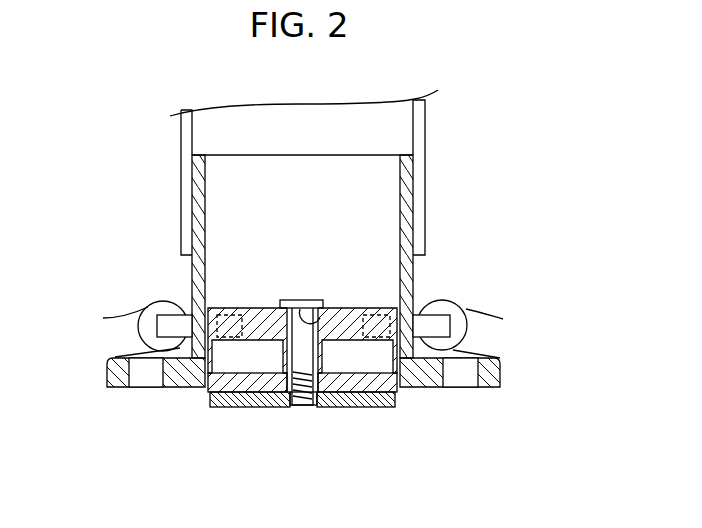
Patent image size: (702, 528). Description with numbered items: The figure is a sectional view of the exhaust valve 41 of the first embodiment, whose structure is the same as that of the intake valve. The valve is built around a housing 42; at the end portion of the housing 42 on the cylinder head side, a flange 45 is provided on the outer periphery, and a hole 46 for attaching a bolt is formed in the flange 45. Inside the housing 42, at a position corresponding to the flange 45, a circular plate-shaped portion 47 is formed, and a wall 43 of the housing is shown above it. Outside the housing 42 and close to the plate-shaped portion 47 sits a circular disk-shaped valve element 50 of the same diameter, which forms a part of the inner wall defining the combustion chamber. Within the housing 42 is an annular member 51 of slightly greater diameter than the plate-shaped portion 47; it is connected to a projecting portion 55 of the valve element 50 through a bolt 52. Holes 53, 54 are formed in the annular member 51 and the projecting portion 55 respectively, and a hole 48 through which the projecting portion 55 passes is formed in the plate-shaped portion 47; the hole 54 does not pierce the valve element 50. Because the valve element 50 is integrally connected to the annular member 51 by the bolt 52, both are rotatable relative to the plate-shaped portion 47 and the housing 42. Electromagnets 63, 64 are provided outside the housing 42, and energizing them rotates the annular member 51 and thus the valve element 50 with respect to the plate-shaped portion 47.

The exhaust valve 41 is at (122, 228).
The housing 42 is at (422, 267).
The bottom wall of case 43 is at (240, 155).
The flange 45 is at (501, 371).
The hole 46 is at (475, 371).
The plate-shaped portion 47 is at (380, 384).
The hole 48 is at (298, 406).
The valve element 50 is at (212, 412).
The annular member 51 is at (237, 301).
The bolt 52 is at (298, 300).
The hole 53 is at (305, 312).
The hole 54 is at (309, 405).
The projecting portion 55 is at (276, 379).
The electromagnet 63 is at (461, 295).
The electromagnet 64 is at (150, 295).